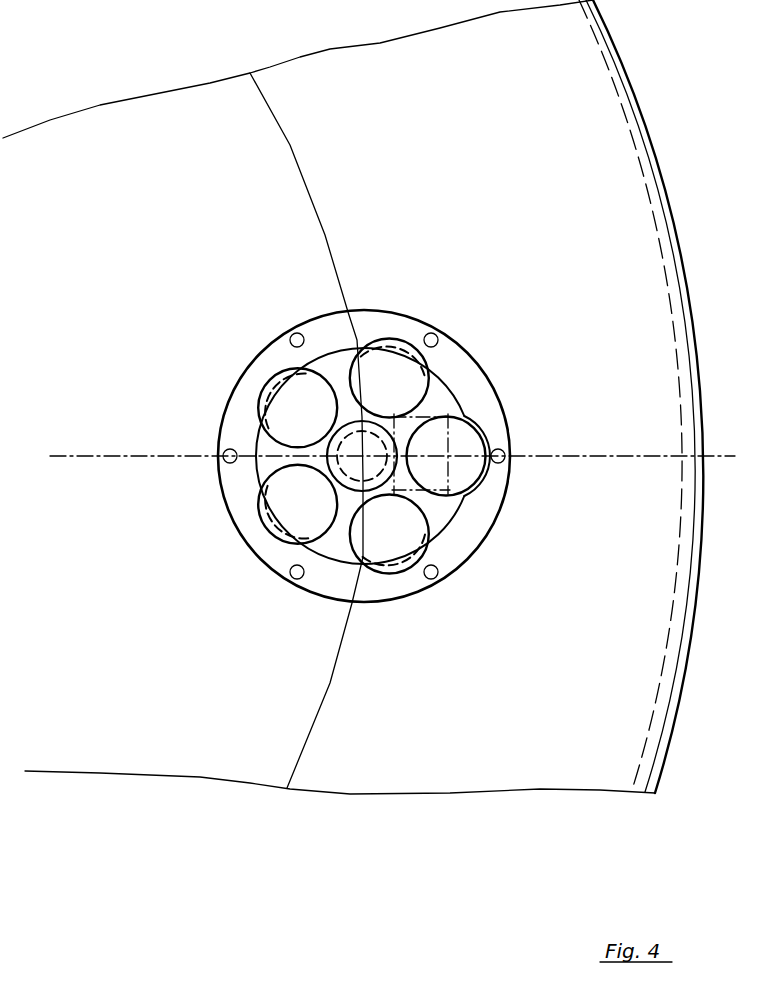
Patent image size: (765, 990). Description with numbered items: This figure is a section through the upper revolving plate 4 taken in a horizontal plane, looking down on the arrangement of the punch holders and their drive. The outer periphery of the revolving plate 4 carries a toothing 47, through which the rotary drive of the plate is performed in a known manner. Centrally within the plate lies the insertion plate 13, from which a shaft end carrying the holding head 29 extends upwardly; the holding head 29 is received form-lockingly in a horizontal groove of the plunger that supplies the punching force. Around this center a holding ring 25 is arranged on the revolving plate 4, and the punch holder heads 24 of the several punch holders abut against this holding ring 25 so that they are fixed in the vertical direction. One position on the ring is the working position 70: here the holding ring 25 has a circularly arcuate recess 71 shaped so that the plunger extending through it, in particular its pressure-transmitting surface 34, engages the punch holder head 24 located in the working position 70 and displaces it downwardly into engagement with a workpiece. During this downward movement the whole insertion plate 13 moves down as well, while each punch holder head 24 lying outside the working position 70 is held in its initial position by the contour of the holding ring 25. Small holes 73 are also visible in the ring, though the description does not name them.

The upper revolving plate 4 is at (534, 130).
The toothing 47 is at (608, 64).
The insertion plate 13 is at (340, 548).
The holding ring 25 is at (412, 583).
The holding head 29 is at (424, 533).
The circularly arcuate recess 71 is at (481, 429).
The bolt holes 73 is at (292, 333).
The punch holder head 24 is at (300, 408).
The working position 70 is at (457, 432).
The surface 34 is at (447, 467).